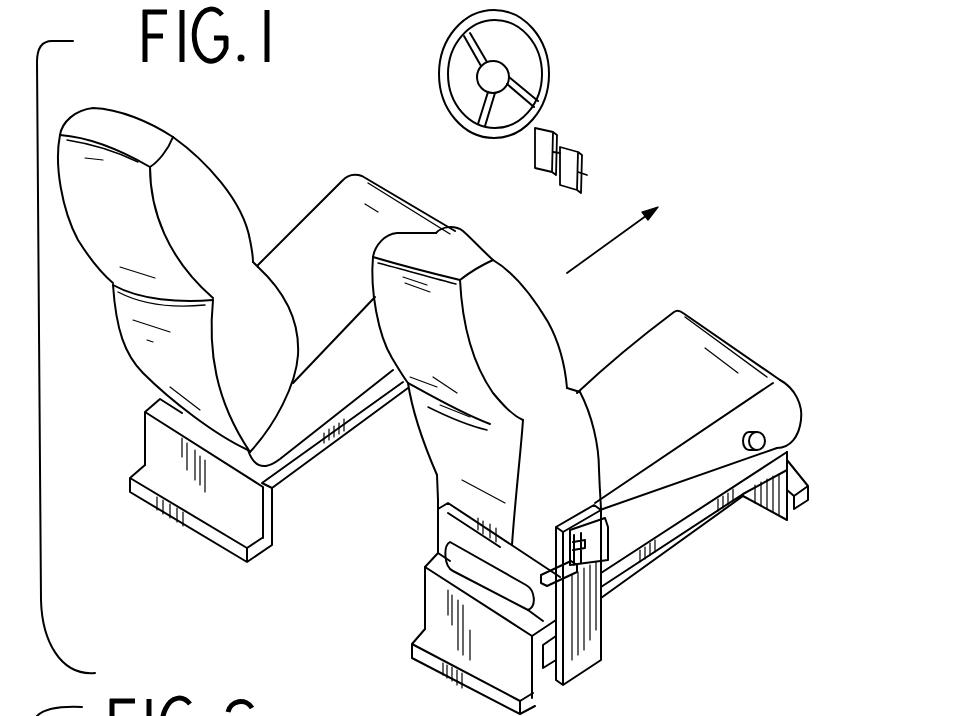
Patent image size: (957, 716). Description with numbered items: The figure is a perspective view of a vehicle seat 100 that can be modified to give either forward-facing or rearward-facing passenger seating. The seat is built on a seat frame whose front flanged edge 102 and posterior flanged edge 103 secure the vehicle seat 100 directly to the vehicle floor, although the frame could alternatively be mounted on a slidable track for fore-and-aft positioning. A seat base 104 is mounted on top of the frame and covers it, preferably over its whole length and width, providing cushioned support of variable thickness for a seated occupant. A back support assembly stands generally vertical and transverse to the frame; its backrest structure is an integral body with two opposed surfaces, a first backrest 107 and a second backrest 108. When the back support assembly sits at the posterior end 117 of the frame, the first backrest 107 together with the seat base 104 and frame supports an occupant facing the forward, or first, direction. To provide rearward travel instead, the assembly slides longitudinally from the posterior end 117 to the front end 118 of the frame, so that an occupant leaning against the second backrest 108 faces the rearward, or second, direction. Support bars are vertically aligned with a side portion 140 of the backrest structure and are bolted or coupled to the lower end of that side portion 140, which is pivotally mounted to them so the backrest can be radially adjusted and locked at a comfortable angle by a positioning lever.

The vehicle seat 100 is at (363, 553).
The front flanged edge 102 is at (792, 518).
The posterior flanged edge 103 is at (533, 707).
The seat base 104 is at (712, 367).
The first backrest 107 is at (528, 280).
The second backrest 108 is at (447, 377).
The posterior end 117 is at (465, 686).
The front end 118 is at (798, 482).
The side portion 140 is at (216, 207).